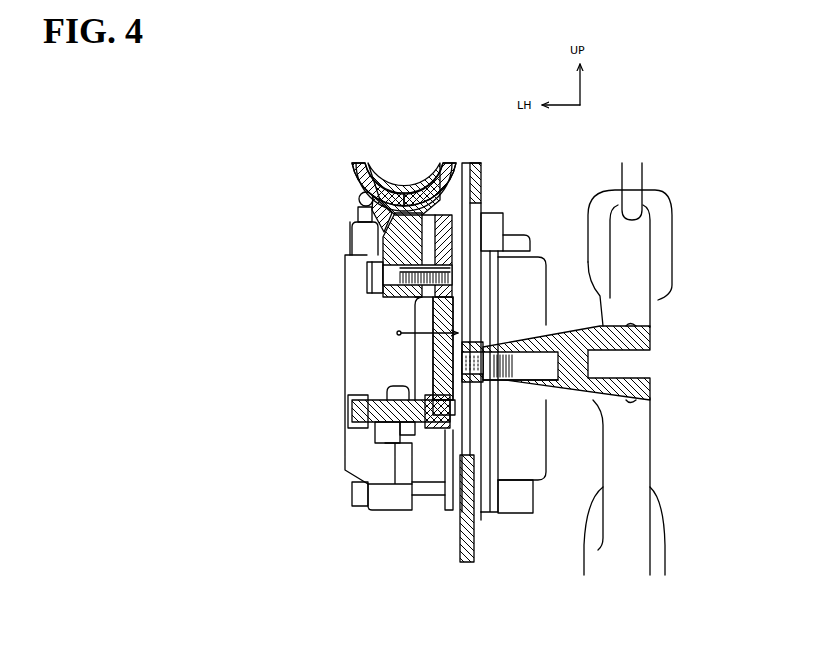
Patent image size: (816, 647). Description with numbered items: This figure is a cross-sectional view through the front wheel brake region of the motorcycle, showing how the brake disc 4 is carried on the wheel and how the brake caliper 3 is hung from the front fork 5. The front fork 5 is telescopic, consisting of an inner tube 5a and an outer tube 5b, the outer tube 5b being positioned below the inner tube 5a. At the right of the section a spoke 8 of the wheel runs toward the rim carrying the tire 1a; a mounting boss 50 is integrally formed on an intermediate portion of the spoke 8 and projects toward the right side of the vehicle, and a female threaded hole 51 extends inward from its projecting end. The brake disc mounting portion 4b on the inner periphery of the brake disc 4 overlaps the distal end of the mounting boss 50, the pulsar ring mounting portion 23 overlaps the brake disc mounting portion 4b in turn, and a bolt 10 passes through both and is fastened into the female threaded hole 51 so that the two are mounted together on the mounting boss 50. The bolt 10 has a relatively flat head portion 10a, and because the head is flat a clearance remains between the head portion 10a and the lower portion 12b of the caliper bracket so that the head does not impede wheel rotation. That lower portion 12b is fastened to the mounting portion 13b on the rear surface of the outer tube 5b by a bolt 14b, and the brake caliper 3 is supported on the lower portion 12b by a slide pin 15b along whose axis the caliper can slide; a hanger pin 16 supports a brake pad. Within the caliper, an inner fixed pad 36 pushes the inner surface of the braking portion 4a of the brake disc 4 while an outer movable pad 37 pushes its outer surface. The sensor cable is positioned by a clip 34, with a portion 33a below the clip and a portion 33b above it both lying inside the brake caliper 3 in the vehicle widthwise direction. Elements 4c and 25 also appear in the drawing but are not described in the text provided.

The tire 1a is at (600, 190).
The brake caliper 3 is at (342, 470).
The brake disc 4 is at (488, 172).
The braking portion 4a is at (460, 550).
The brake disc mounting portion 4b is at (522, 368).
The shaft portion 4c is at (528, 368).
The front fork 5 is at (418, 132).
The inner tube 5a is at (421, 166).
The outer tube 5b is at (354, 166).
The spoke 8 is at (608, 287).
The bolt 10 is at (512, 352).
The head portion 10a is at (460, 373).
The lower portion 12b is at (436, 353).
The mounting portion 13b is at (392, 243).
The bolt 14b is at (368, 274).
The slide pin 15b is at (352, 408).
The hanger pin 16 is at (420, 509).
The pulsar ring mounting portion 23 is at (478, 400).
The plate 25 is at (522, 393).
The portion of the sensor cable below the clip 33a is at (363, 208).
The portion of the sensor cable above the clip 33b is at (372, 226).
The clip 34 is at (361, 191).
The inner fixed pad 36 is at (480, 515).
The outer movable pad 37 is at (453, 510).
The mounting boss 50 is at (572, 342).
The female threaded hole 51 is at (553, 398).